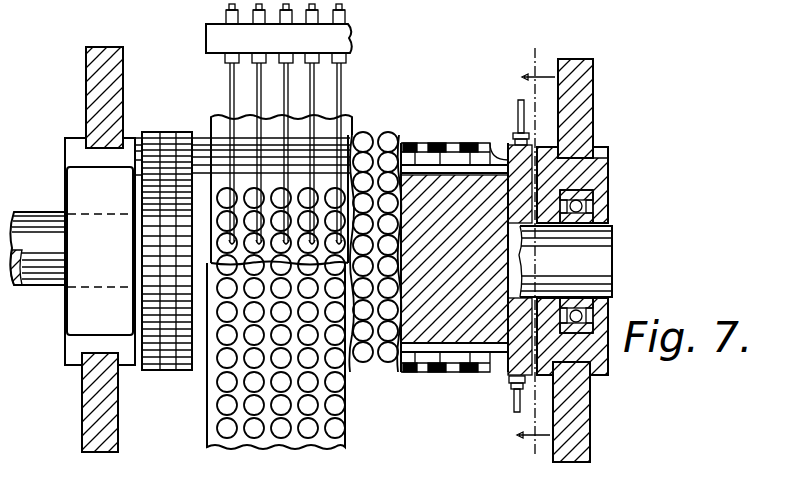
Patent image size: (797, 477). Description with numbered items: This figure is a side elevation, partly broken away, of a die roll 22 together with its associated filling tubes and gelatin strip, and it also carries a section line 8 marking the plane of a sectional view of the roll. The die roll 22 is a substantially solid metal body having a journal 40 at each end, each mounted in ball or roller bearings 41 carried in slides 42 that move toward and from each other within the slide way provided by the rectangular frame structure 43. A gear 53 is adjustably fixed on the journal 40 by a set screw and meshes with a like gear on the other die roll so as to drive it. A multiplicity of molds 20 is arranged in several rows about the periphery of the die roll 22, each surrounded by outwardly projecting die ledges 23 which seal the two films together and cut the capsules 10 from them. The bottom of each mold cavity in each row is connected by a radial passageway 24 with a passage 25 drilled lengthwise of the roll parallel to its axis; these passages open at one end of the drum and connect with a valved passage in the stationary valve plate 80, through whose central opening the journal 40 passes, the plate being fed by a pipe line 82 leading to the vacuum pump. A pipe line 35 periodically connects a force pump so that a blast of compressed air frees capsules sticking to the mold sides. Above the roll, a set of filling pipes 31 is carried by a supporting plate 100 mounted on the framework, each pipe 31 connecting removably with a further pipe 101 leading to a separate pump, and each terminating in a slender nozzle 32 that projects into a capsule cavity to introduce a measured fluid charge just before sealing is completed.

The section line 8 is at (536, 255).
The capsules 10 is at (345, 420).
The mold cavities 20 is at (440, 143).
The die rolls 22 is at (454, 257).
The die ledges 23 is at (402, 143).
The radial passageway 24 is at (490, 143).
The passage 25 is at (468, 168).
The filling pipes 31 is at (284, 87).
The nozzle 32 is at (227, 243).
The pipe line 35 is at (514, 398).
The journal 40 is at (311, 254).
The ball or roller bearings 41 is at (596, 205).
The slides 42 is at (70, 310).
The rectangular frame structure 43 is at (92, 98).
The gear 53 is at (165, 372).
The stationary valve plate 80 is at (530, 148).
The pipe line 82 is at (519, 118).
The supporting plate 100 is at (206, 40).
The pipe 101 is at (229, 8).